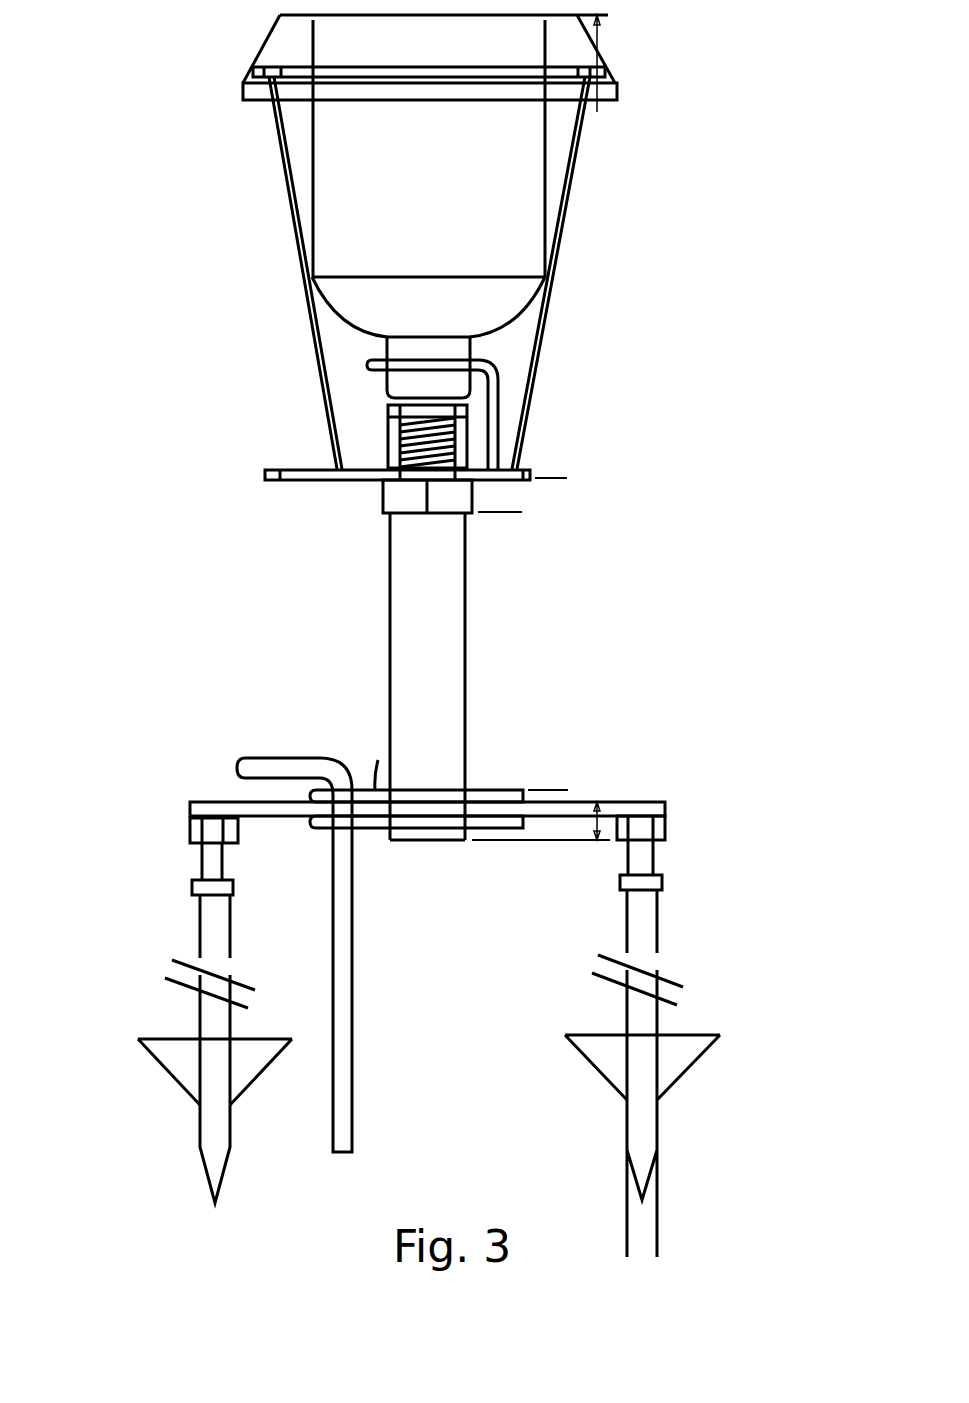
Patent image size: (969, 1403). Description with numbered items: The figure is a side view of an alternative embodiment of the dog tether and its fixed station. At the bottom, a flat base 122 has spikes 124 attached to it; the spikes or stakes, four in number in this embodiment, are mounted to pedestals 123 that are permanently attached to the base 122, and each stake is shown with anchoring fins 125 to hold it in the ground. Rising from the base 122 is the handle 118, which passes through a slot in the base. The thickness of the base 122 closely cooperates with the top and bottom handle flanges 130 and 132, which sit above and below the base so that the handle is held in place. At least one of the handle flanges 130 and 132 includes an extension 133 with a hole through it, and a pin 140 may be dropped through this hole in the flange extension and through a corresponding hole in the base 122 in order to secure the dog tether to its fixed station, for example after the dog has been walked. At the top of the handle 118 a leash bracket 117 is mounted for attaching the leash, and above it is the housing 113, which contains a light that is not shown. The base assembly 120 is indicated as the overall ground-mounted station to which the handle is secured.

The housing 113 is at (520, 245).
The leash bracket 117 is at (288, 481).
The handle 118 is at (434, 651).
The base mounting assembly 120 is at (312, 742).
The base 122 is at (645, 808).
The pedestal 123 is at (663, 828).
The spike 124 is at (640, 1132).
The anchoring fin 125 is at (250, 1068).
The top handle flange 130 is at (378, 760).
The bottom handle flange 132 is at (372, 822).
The extension 133 is at (318, 828).
The pin 140 is at (345, 1037).